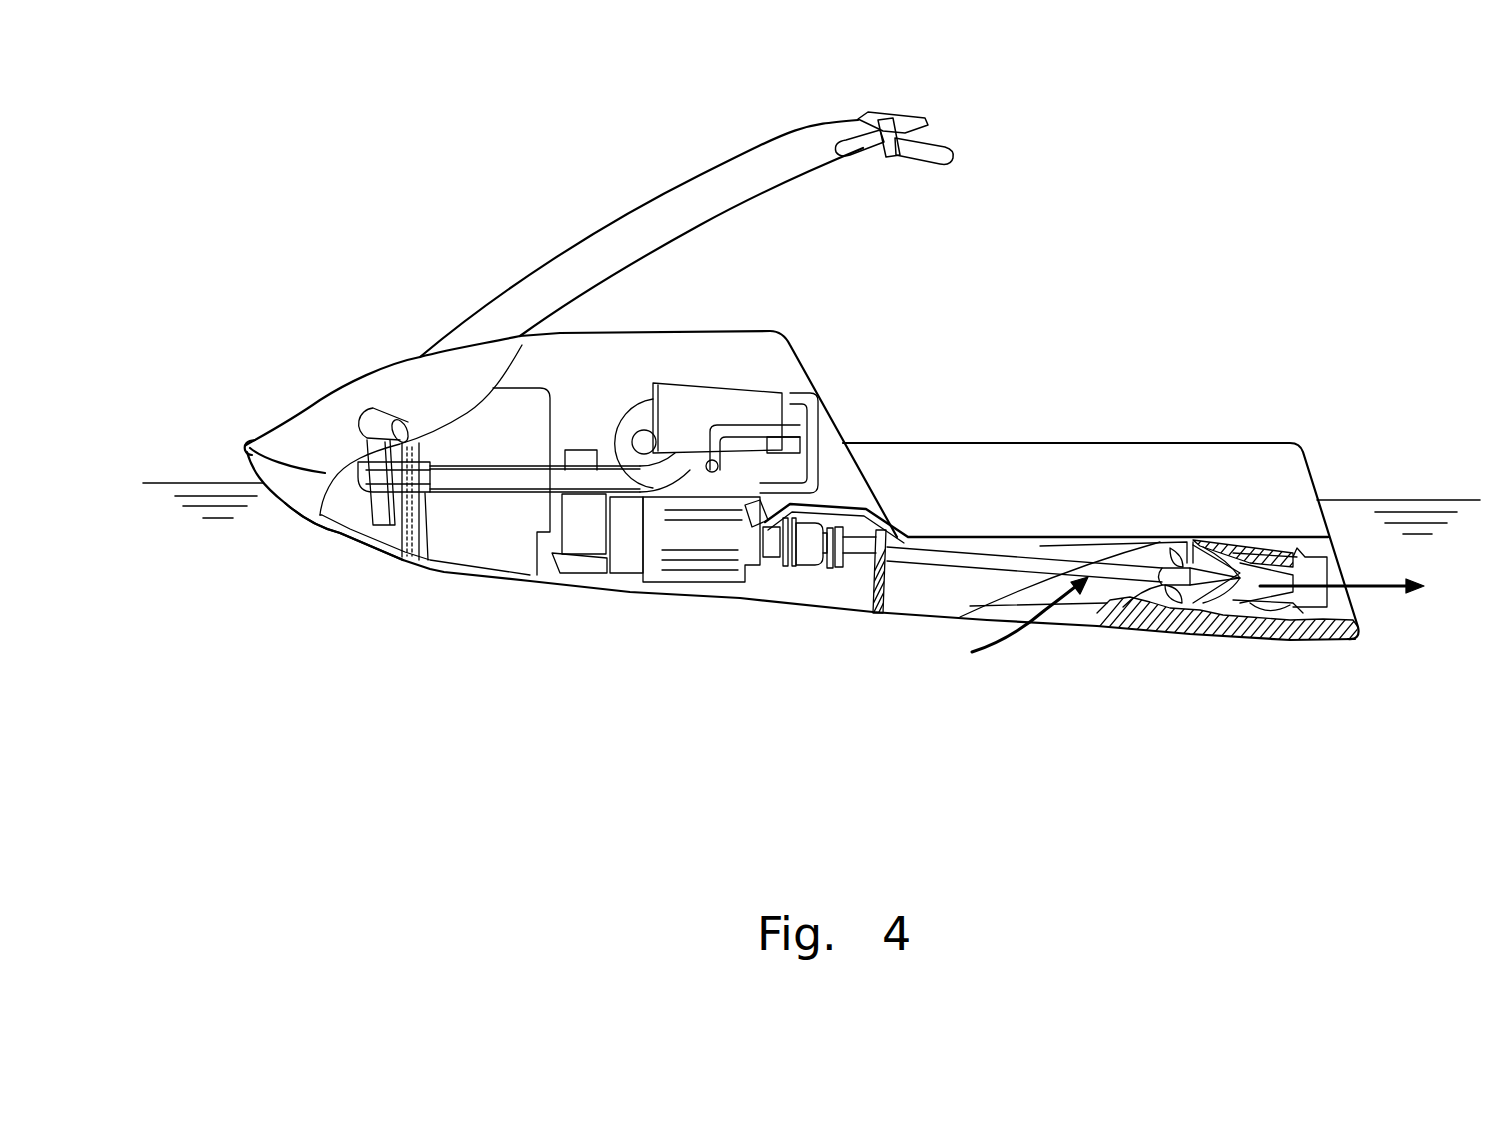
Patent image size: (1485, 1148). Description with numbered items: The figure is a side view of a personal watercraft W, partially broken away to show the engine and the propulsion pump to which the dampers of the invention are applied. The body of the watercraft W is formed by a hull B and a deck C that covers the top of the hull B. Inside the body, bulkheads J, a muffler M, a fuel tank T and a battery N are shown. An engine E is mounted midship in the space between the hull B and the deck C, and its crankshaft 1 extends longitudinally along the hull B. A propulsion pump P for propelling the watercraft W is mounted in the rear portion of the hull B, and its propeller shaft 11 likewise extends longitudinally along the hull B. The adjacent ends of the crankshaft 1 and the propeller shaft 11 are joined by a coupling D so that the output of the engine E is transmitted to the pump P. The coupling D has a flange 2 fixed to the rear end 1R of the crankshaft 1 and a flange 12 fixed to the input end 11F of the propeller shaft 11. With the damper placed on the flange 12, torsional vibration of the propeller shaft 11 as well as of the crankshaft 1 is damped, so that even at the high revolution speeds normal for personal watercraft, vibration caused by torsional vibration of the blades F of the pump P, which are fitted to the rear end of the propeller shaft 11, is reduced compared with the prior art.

The personal watercraft W is at (372, 320).
The deck C is at (298, 397).
The hull B is at (297, 512).
The muffler M is at (350, 517).
The bulkhead J is at (408, 535).
The fuel tank T is at (469, 572).
The battery N is at (571, 572).
The engine E is at (688, 580).
The crankshaft 1 is at (784, 629).
The rear end of the crankshaft 1R is at (768, 565).
The flange 2 is at (777, 565).
The flange 12 is at (798, 565).
The coupling D is at (950, 735).
The input end of the propeller shaft 11F is at (823, 512).
The propeller shaft 11 is at (977, 568).
The propulsion pump P is at (1140, 537).
The blades F is at (1158, 627).